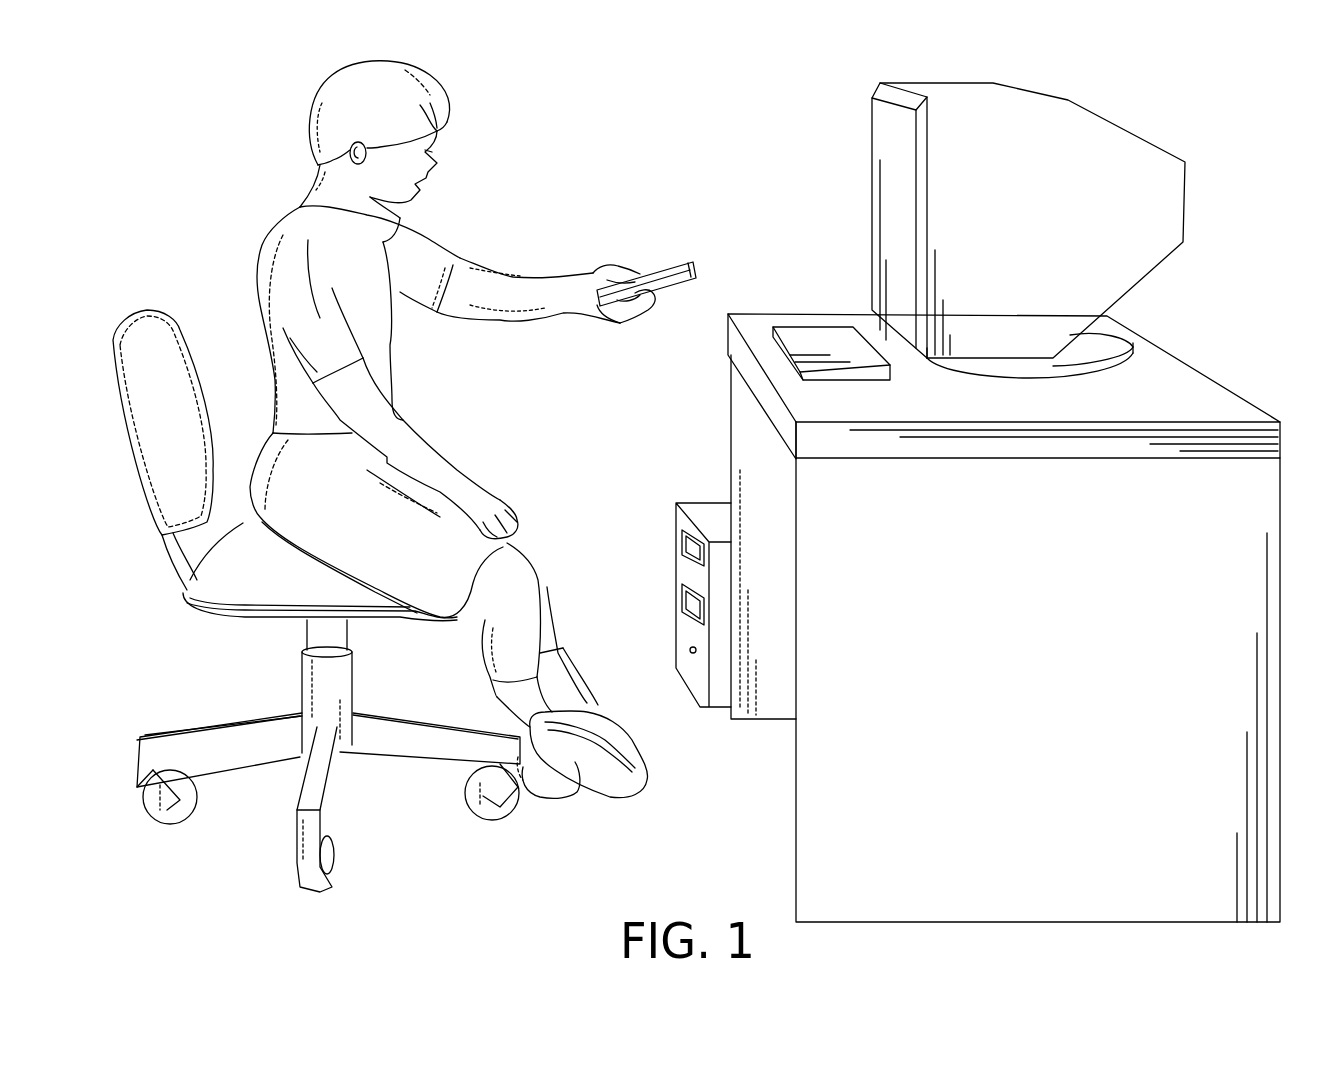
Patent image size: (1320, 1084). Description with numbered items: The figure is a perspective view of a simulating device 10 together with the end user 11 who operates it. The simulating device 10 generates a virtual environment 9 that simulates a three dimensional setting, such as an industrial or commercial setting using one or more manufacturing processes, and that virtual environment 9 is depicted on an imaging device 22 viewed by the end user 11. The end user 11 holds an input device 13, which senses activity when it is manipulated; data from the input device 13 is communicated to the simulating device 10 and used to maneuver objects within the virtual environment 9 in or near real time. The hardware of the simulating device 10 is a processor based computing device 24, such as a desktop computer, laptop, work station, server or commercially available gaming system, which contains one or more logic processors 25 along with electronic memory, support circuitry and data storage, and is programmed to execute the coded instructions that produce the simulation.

The virtual environment 9 is at (887, 143).
The simulating device 10 is at (738, 152).
The end user 11 is at (291, 232).
The input device 13 is at (657, 283).
The imaging device 22 is at (1024, 300).
The processor based computing device 24 is at (824, 857).
The logic processor 25 is at (854, 783).